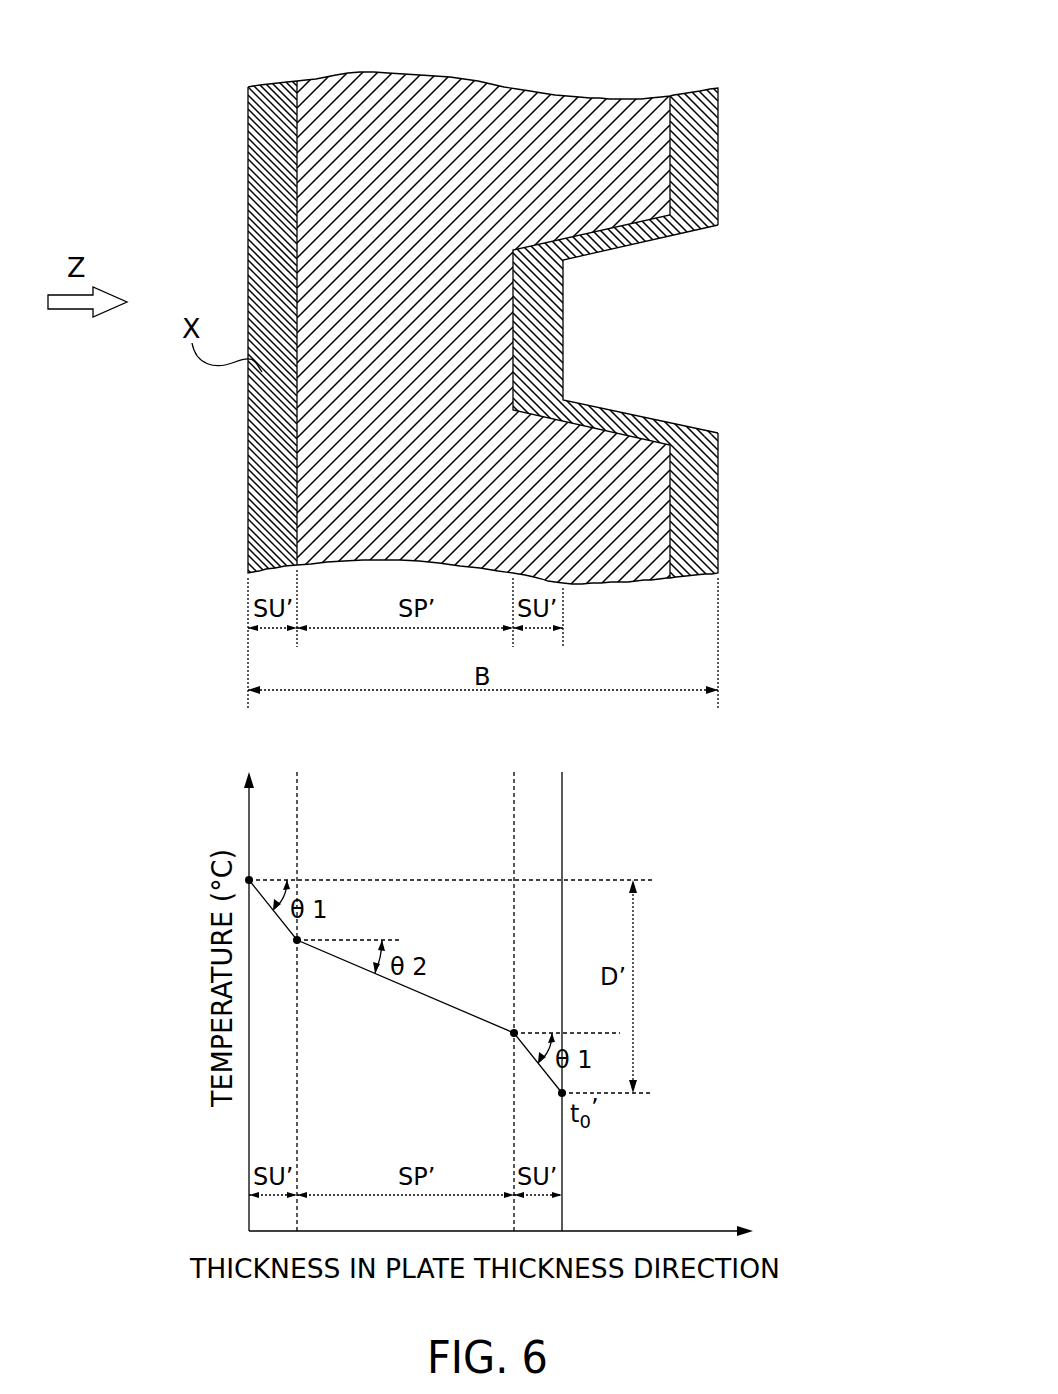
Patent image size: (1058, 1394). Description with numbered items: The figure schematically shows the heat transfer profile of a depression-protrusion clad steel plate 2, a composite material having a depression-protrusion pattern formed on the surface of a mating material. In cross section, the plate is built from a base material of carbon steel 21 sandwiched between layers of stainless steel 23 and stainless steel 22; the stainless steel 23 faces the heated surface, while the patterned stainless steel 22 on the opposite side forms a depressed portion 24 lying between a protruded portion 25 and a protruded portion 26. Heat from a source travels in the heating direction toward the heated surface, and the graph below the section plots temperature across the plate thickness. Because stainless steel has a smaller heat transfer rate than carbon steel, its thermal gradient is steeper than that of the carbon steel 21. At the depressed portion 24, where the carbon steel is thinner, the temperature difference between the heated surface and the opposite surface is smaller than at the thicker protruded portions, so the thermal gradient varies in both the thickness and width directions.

The depression-protrusion clad steel plate 2 is at (513, 474).
The carbon steel 21 is at (505, 120).
The stainless steel 22 is at (553, 288).
The stainless steel 23 is at (262, 228).
The depressed portion 24 is at (632, 323).
The protruded portion 25 is at (734, 125).
The protruded portion 26 is at (734, 540).